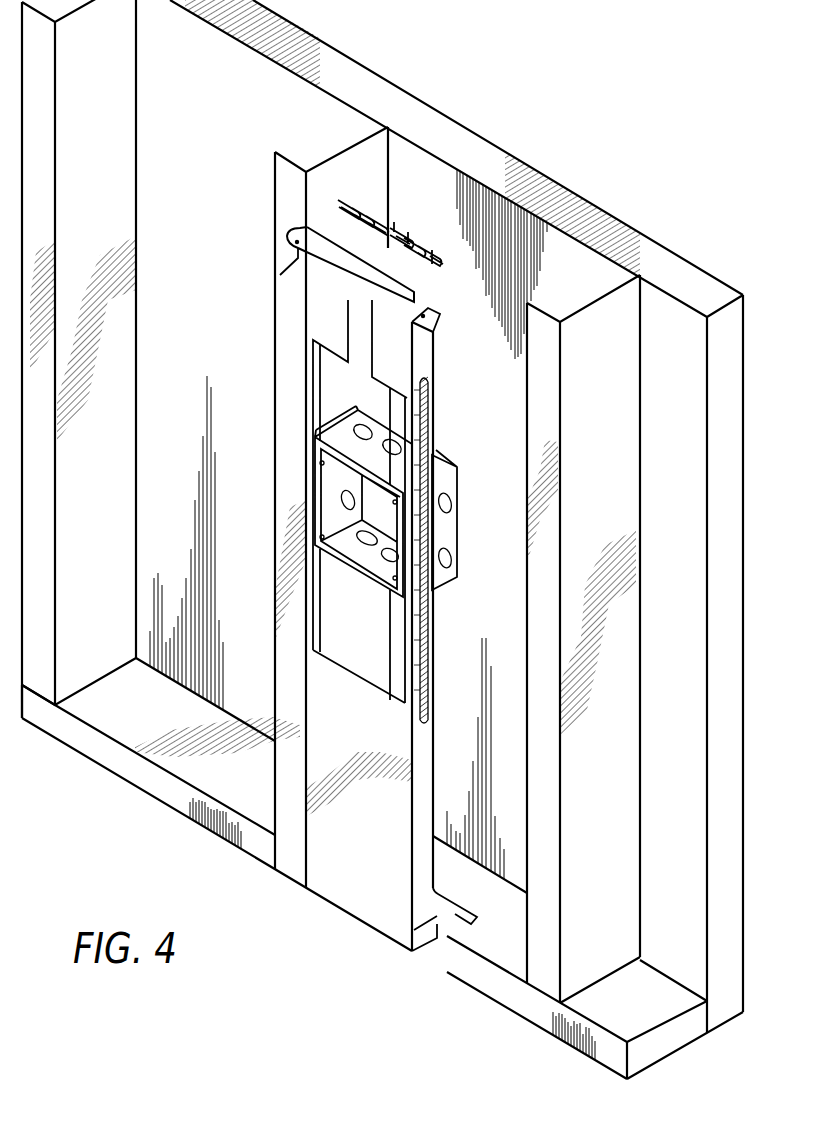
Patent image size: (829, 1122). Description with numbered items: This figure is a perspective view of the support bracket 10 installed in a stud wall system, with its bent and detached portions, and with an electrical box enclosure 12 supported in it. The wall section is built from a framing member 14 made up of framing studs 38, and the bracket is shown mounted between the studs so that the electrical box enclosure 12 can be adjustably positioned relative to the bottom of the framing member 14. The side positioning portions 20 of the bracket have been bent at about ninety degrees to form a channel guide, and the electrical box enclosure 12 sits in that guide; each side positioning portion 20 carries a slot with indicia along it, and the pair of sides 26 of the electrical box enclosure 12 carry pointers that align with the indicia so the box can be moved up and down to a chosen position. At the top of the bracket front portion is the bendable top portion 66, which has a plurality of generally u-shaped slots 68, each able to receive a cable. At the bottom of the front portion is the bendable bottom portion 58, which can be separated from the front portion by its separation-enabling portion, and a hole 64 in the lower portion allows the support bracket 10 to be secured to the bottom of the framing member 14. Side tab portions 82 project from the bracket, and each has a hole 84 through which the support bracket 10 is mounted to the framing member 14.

The support bracket 10 is at (397, 868).
The electrical box enclosure 12 is at (368, 458).
The framing member 14 is at (372, 152).
The side positioning portions 20 is at (423, 778).
The sides 26 is at (443, 540).
The framing stud 38 is at (343, 130).
The bottom portion 58 is at (425, 942).
The hole 64 is at (358, 905).
The top portion 66 is at (388, 236).
The slots 68 is at (360, 205).
The side tab portions 82 is at (433, 307).
The hole 84 is at (430, 310).